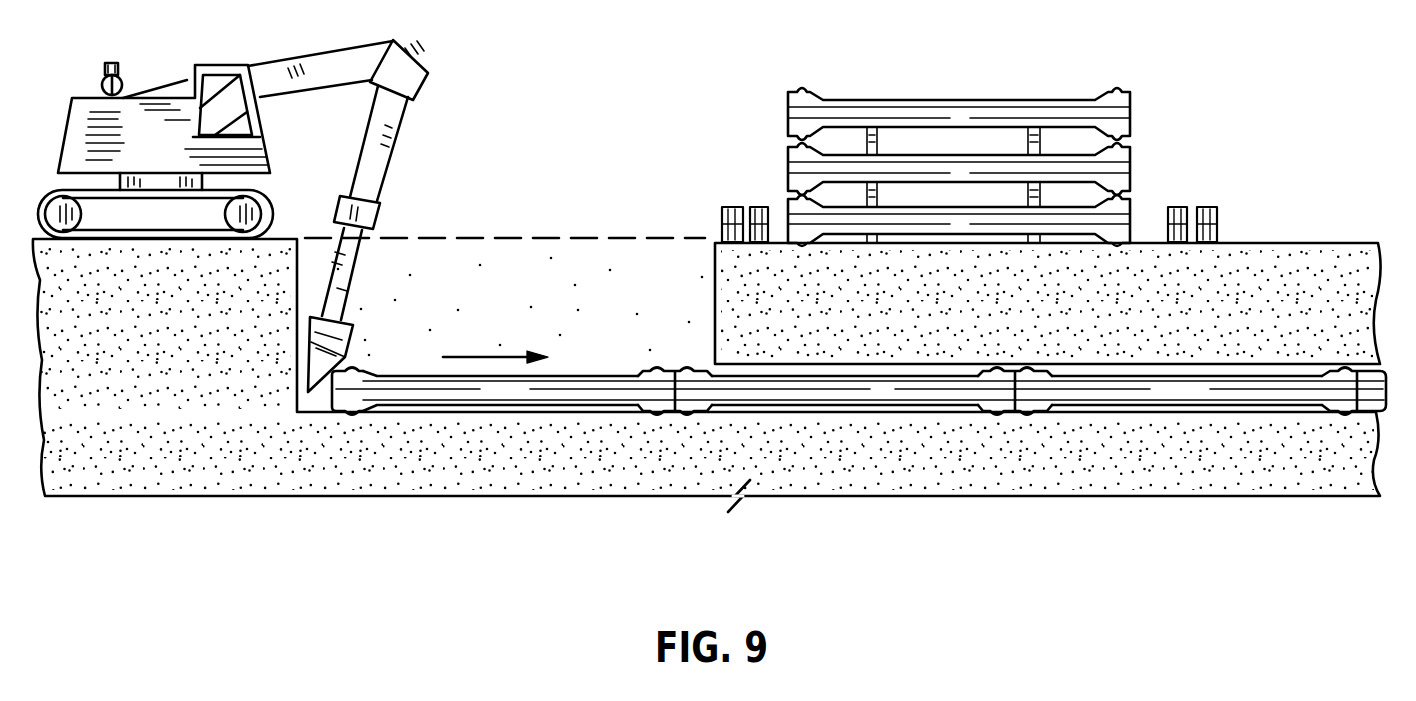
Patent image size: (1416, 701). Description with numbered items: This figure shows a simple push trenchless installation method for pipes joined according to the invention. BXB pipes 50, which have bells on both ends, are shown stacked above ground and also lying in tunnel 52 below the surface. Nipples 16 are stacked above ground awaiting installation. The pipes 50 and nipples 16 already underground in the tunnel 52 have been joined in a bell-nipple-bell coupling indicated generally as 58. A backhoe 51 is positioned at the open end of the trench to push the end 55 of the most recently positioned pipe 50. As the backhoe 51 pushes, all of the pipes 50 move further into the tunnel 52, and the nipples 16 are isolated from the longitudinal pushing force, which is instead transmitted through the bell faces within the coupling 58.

The backhoe 51 is at (215, 65).
The end of the most recently positioned pipe 55 is at (330, 388).
The BXB pipe 50 is at (990, 101).
The tunnel 52 is at (948, 409).
The BNB coupling 58 is at (675, 412).
The nipple 16 is at (737, 207).